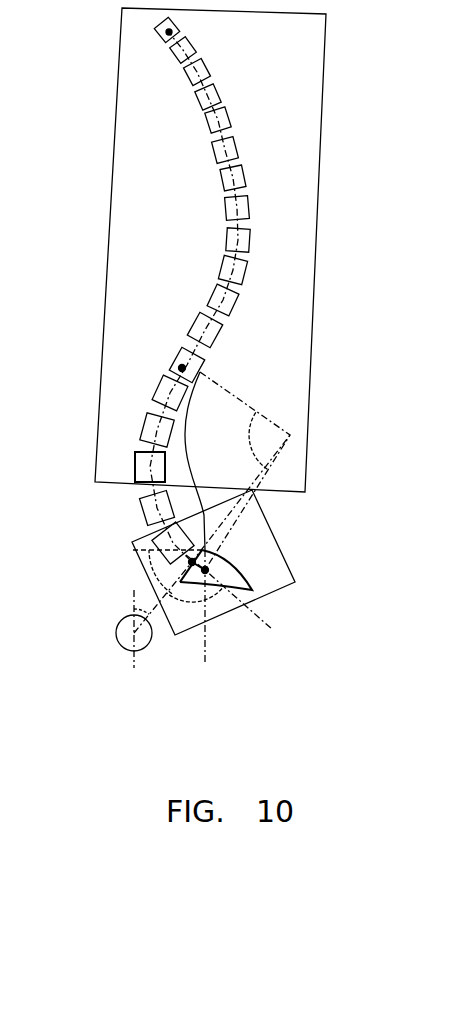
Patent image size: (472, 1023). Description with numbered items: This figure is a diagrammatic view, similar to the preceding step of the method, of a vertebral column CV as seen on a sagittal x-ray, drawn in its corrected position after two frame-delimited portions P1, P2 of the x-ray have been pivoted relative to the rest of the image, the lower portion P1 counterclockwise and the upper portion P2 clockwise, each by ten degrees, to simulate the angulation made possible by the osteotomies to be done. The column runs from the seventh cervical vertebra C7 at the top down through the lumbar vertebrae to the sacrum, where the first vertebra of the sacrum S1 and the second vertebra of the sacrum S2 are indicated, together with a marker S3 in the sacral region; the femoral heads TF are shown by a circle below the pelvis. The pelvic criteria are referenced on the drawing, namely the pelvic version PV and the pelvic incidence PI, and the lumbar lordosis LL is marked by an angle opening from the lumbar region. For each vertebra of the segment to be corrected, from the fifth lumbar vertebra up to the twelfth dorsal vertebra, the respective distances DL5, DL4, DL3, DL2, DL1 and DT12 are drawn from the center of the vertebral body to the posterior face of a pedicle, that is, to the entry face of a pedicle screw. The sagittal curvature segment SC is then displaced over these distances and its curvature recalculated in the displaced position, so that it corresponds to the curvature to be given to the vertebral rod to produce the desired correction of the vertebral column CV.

The seventh cervical vertebra C7 is at (157, 29).
The vertebral column CV is at (211, 290).
The second portion of the x-ray P2 is at (108, 251).
The distance for vertebra T12 DT12 is at (211, 364).
The distance for vertebra L1 DL1 is at (176, 398).
The distance for vertebra L2 DL2 is at (164, 433).
The distance for vertebra L3 DL3 is at (160, 468).
The distance for vertebra L4 DL4 is at (165, 508).
The distance for vertebra L5 DL5 is at (179, 543).
The sagittal curvature segment SC is at (183, 459).
The lumbar lordosis LL is at (245, 471).
The first vertebra of the sacrum S1 is at (204, 561).
The second vertebra of the sacrum S2 is at (216, 570).
The sacral slope angle S3 is at (167, 572).
The pelvic version PV is at (212, 551).
The pelvic incidence PI is at (220, 592).
The femoral heads TF is at (115, 622).
The first portion of the x-ray P1 is at (282, 594).